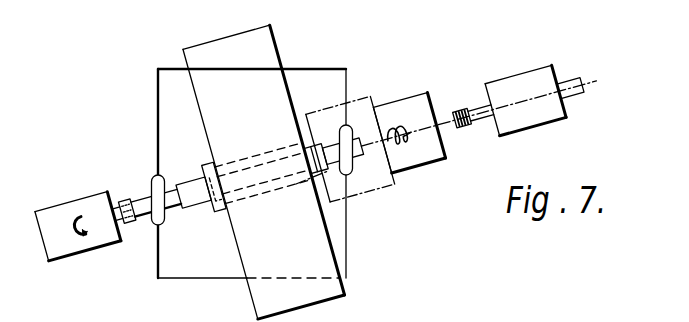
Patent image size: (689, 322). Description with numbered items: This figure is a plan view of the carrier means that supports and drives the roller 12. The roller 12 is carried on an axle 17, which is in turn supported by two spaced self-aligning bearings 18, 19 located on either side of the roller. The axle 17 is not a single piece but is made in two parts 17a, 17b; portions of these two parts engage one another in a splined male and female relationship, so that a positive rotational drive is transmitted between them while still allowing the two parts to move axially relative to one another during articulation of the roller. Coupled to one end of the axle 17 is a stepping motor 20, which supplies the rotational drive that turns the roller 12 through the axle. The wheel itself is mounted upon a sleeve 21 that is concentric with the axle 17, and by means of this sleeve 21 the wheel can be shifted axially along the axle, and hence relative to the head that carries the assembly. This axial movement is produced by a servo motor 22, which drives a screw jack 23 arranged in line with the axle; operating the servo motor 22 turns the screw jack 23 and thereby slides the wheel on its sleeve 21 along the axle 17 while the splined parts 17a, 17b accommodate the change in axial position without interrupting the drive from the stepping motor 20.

The roller 12 is at (270, 58).
The axle 17 is at (333, 142).
The axle part 17a is at (182, 214).
The axle part 17b is at (289, 174).
The self-aligning bearing 18 is at (152, 180).
The self-aligning bearing 19 is at (345, 127).
The stepping motor 20 is at (43, 208).
The sleeve 21 is at (222, 213).
The servo motor 22 is at (542, 67).
The screw jack 23 is at (481, 122).